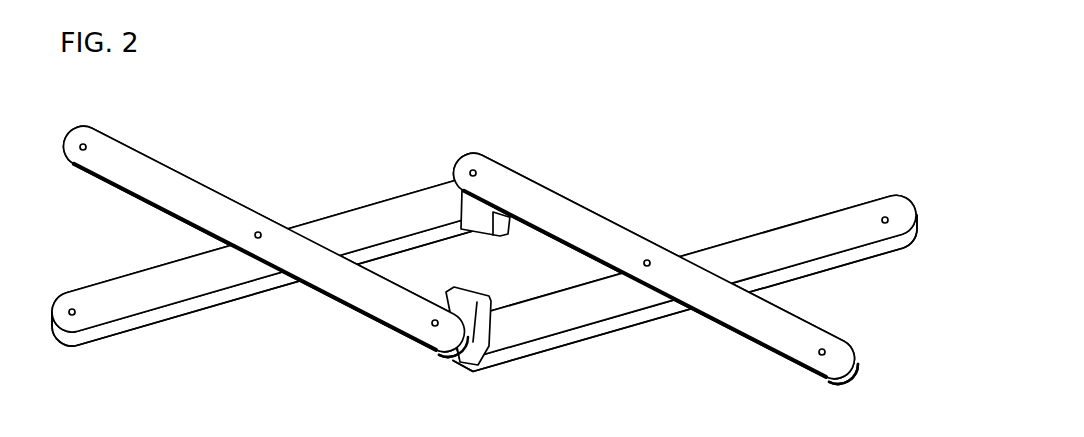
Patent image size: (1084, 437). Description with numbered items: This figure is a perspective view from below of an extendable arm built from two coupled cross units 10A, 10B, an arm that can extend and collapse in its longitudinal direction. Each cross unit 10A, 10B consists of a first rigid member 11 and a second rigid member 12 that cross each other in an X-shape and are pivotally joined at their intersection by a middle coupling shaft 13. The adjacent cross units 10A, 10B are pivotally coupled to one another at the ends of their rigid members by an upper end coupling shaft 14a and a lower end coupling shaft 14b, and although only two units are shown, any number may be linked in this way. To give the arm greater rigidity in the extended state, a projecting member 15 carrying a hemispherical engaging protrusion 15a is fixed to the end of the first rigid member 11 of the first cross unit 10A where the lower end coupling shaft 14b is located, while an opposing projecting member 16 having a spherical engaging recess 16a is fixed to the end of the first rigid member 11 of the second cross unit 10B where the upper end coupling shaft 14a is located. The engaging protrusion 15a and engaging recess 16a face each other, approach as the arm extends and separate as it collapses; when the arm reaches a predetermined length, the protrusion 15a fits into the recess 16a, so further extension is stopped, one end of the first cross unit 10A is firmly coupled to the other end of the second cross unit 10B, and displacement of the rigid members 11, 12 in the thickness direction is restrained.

The first cross unit 10A is at (310, 160).
The second cross unit 10B is at (670, 160).
The first rigid member 11 is at (350, 292).
The second rigid member 12 is at (200, 282).
The middle coupling shaft 13 is at (257, 231).
The upper end coupling shaft 14a is at (84, 143).
The lower end coupling shaft 14b is at (78, 316).
The projecting member 15 is at (510, 346).
The engaging protrusion 15a is at (445, 292).
The opposing projecting member 16 is at (514, 180).
The engaging recess 16a is at (487, 243).